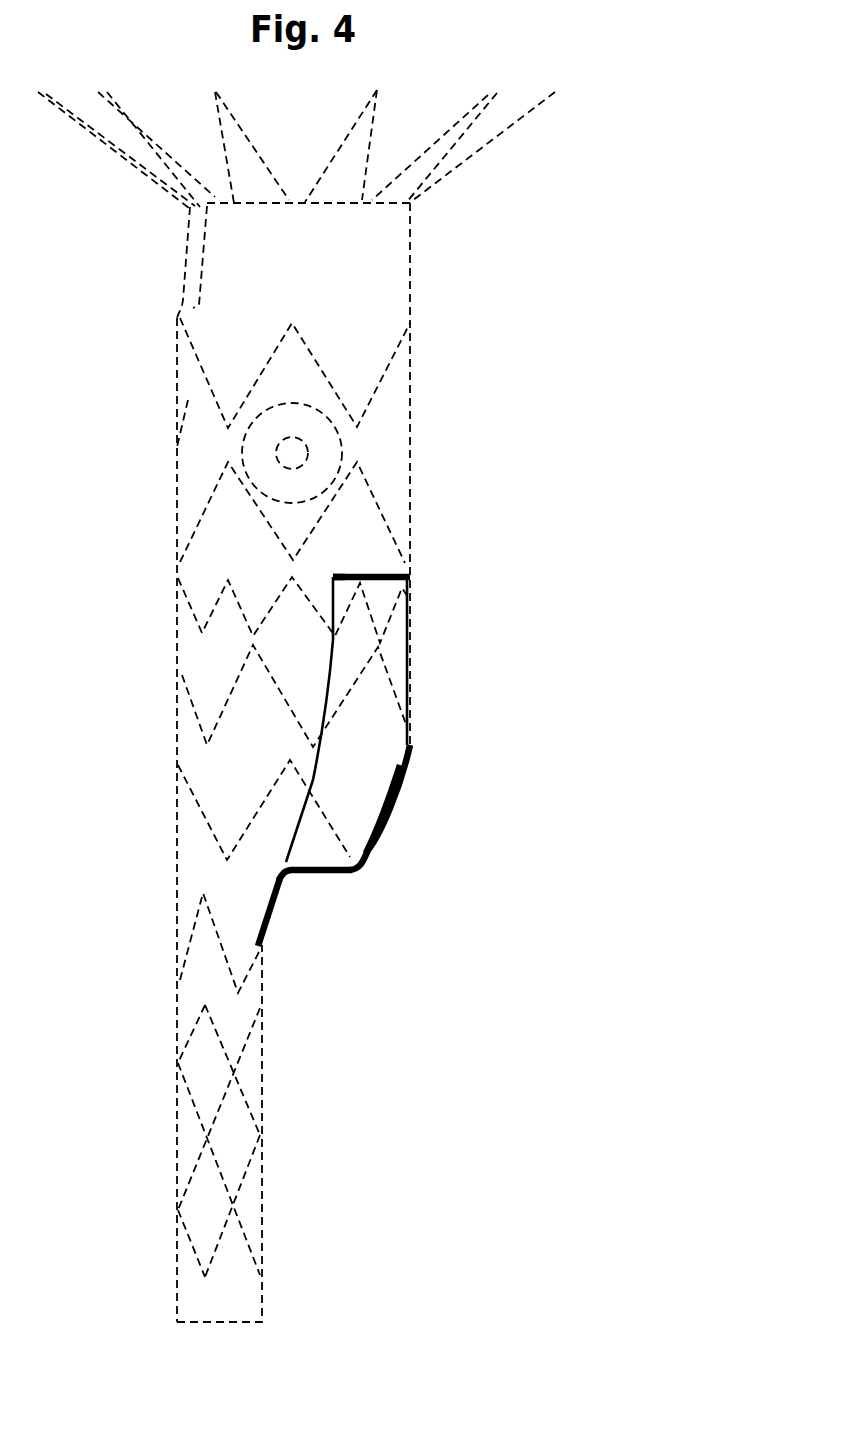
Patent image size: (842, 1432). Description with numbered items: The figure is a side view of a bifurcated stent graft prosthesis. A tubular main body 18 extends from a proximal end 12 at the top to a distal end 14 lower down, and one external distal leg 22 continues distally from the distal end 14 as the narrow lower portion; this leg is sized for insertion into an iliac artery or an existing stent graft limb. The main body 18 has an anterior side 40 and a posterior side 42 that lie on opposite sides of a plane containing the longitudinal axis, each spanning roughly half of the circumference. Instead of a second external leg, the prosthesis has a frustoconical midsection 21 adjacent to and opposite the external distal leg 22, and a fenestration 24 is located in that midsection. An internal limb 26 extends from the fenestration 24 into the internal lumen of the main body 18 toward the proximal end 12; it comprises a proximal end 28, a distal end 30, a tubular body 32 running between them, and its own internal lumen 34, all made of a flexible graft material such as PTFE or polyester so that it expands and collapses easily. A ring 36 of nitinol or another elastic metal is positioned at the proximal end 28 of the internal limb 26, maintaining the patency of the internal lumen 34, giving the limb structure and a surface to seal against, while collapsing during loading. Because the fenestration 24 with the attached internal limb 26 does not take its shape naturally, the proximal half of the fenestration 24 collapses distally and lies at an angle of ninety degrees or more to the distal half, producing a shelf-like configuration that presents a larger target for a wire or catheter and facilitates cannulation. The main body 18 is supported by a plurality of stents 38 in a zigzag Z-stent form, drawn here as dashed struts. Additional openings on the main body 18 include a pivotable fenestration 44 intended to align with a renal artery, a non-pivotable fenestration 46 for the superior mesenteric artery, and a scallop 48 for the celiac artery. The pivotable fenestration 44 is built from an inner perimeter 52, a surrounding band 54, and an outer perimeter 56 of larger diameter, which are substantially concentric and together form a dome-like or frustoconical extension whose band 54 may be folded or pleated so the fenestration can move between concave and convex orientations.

The proximal end 12 is at (411, 207).
The distal end 14 is at (178, 856).
The tubular main body 18 is at (178, 600).
The frustoconical midsection 21 is at (397, 783).
The external distal leg 22 is at (262, 1133).
The fenestration 24 is at (338, 874).
The internal limb 26 is at (387, 698).
The proximal end 28 is at (413, 578).
The distal end 30 is at (275, 903).
The tubular body 32 is at (385, 644).
The internal lumen 34 is at (362, 763).
The ring 36 is at (380, 577).
The stents 38 is at (393, 360).
The anterior side 40 is at (177, 505).
The posterior side 42 is at (412, 267).
The pivotable fenestrations 44 is at (307, 487).
The non-pivotable fenestration 46 is at (186, 402).
The scallop 48 is at (188, 261).
The inner perimeter 52 is at (308, 455).
The band 54 is at (291, 400).
The outer perimeter 56 is at (242, 448).